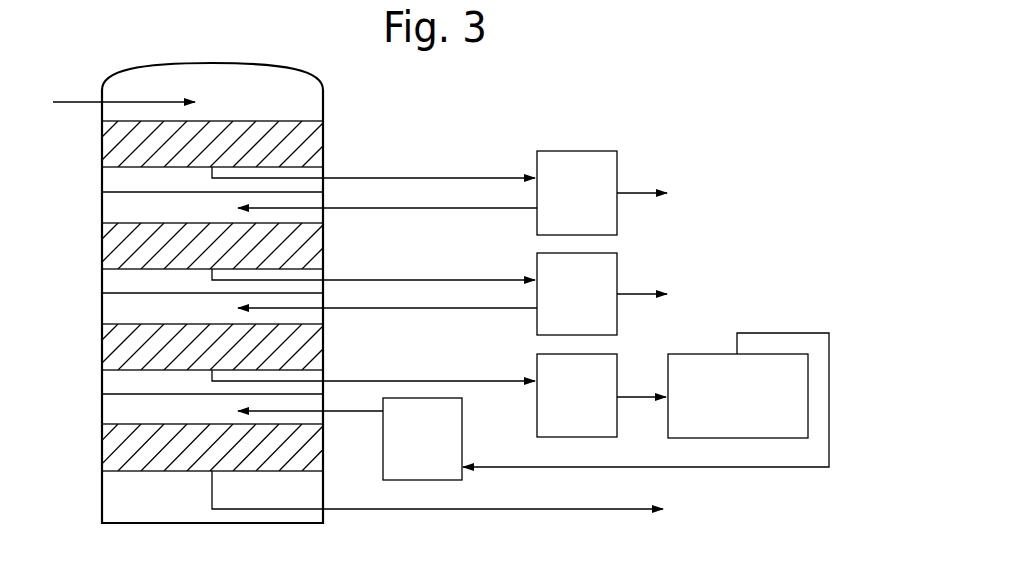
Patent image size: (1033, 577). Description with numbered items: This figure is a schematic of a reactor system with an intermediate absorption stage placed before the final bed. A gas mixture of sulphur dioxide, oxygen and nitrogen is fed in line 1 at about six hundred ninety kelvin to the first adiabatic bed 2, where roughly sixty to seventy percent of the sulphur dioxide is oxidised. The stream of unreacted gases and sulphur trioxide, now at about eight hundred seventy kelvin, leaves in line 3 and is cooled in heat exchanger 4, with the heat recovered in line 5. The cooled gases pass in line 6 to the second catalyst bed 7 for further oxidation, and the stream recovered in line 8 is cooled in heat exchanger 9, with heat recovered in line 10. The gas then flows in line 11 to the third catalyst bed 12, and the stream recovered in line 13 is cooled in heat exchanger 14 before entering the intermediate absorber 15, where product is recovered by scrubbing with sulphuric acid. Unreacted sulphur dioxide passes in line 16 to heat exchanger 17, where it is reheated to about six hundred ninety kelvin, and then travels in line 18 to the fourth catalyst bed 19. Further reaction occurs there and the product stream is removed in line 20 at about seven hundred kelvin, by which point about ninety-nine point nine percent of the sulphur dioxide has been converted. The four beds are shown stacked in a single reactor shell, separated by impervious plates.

The line 1 is at (63, 100).
The first adiabatic bed 2 is at (303, 138).
The line 3 is at (475, 177).
The heat exchanger 4 is at (586, 206).
The line 5 is at (647, 190).
The line 6 is at (475, 210).
The second catalyst bed 7 is at (293, 238).
The line 8 is at (438, 277).
The heat exchanger 9 is at (586, 307).
The line 10 is at (648, 293).
The line 11 is at (438, 311).
The third catalyst bed 12 is at (297, 347).
The line 13 is at (470, 379).
The heat exchanger 14 is at (592, 409).
The intermediate absorber 15 is at (753, 409).
The line 16 is at (795, 333).
The heat exchanger 17 is at (403, 480).
The line 18 is at (355, 411).
The fourth catalyst bed 19 is at (137, 462).
The line 20 is at (475, 512).